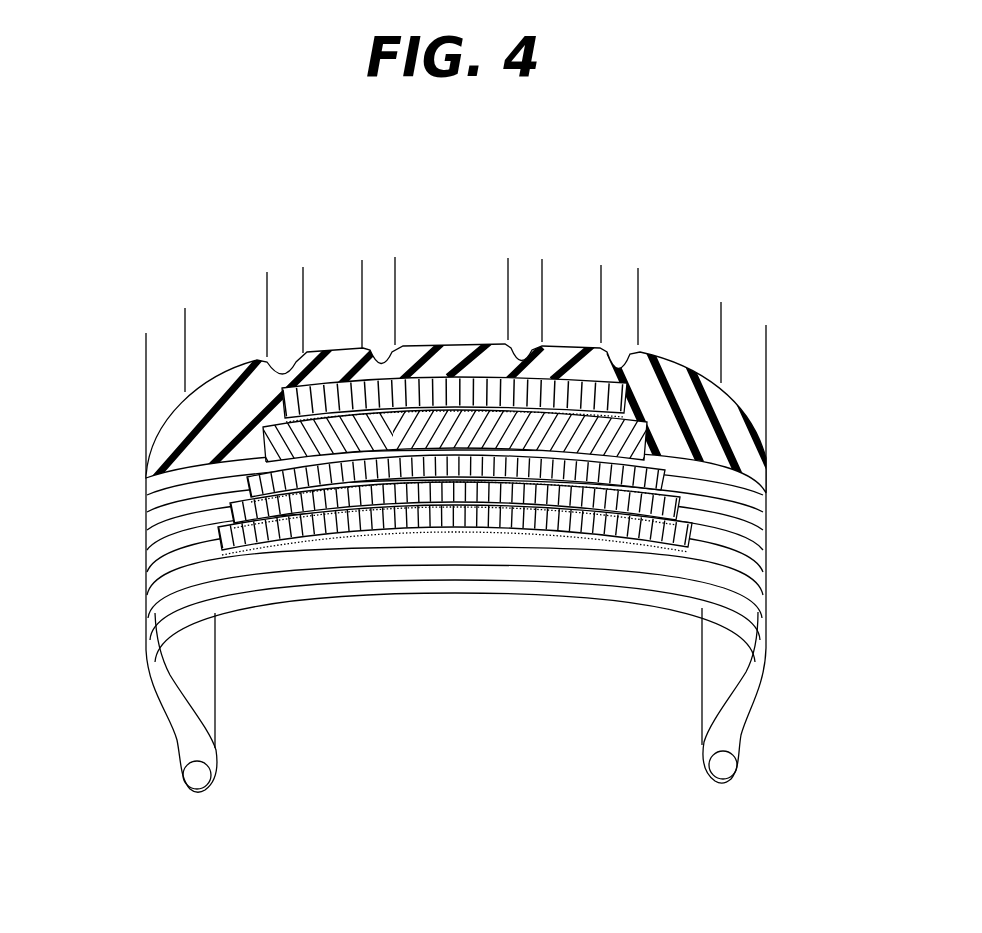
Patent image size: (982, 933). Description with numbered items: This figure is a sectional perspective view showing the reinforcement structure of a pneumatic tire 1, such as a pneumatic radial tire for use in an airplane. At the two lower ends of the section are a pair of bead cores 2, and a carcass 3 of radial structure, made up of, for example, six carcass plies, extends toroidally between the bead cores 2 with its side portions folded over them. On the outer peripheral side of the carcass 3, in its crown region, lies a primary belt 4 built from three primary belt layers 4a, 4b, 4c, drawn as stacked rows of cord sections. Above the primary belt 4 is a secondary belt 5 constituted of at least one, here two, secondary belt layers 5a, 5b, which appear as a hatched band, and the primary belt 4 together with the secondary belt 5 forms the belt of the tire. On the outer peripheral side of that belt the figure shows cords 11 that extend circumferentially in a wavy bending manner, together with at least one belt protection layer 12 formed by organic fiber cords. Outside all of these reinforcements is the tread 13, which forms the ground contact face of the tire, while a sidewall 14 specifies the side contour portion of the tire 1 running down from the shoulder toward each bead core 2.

The product tire 1 is at (697, 255).
The bead cores 2 is at (203, 775).
The carcass 3 is at (143, 593).
The primary belt 4 is at (455, 605).
The primary belt layer 4a is at (460, 513).
The primary belt layer 4b is at (533, 490).
The primary belt layer 4c is at (625, 477).
The secondary belt 5 is at (455, 566).
The secondary belt layer 5a is at (410, 430).
The secondary belt layer 5b is at (310, 440).
The cords 11 is at (553, 385).
The belt protection layer 12 is at (462, 362).
The tread 13 is at (322, 347).
The sidewall 14 is at (145, 482).